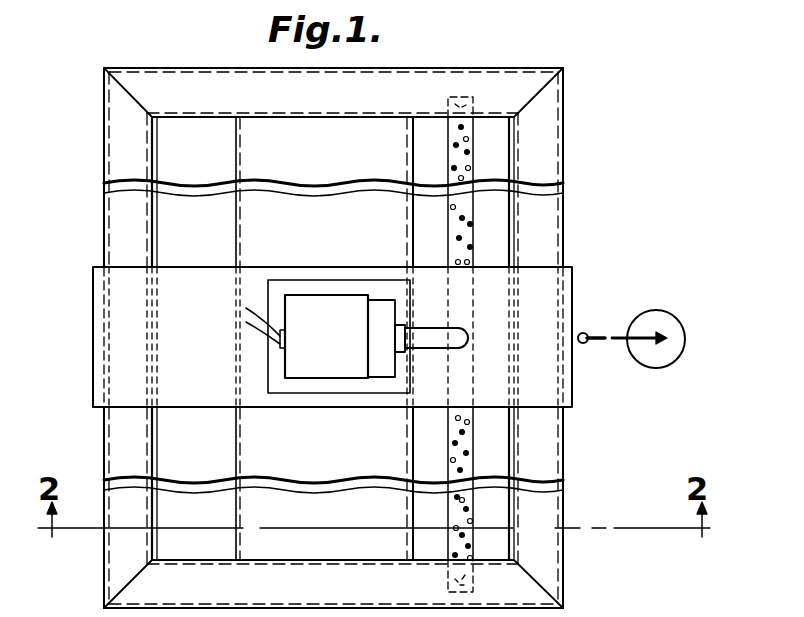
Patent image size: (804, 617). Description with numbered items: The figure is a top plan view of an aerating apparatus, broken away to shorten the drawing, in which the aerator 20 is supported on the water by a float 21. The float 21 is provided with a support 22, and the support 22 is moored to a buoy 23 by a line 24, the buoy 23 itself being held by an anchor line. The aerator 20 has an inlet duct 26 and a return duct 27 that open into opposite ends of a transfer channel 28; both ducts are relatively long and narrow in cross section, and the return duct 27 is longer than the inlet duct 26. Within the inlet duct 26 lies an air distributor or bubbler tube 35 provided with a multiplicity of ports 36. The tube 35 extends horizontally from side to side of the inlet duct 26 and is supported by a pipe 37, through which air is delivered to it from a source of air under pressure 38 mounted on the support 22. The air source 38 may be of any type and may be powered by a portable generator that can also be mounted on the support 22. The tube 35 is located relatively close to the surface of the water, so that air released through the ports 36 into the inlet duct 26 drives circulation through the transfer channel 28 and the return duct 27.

The aerator 20 is at (260, 432).
The float 21 is at (110, 136).
The support 22 is at (198, 269).
The buoy 23 is at (672, 326).
The line 24 is at (600, 335).
The inlet duct 26 is at (497, 158).
The return duct 27 is at (173, 207).
The transfer channel 28 is at (333, 242).
The air distributor or bubbler tube 35 is at (475, 229).
The ports 36 is at (452, 256).
The pipe 37 is at (432, 336).
The source of air under pressure 38 is at (328, 336).